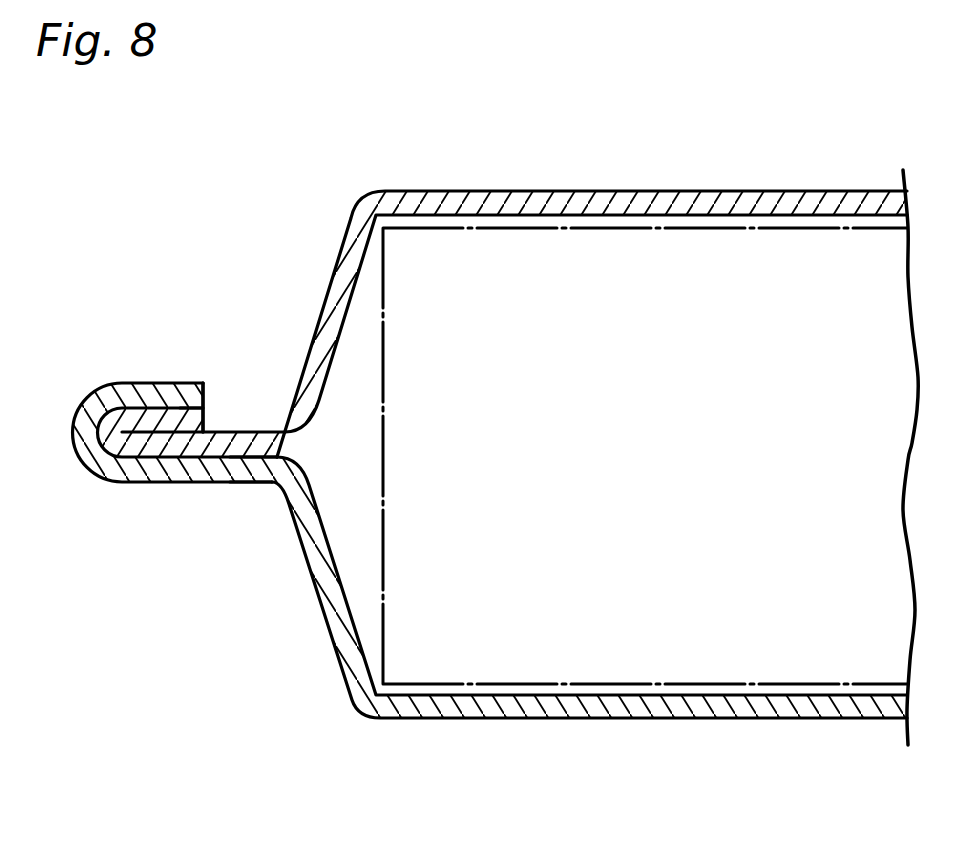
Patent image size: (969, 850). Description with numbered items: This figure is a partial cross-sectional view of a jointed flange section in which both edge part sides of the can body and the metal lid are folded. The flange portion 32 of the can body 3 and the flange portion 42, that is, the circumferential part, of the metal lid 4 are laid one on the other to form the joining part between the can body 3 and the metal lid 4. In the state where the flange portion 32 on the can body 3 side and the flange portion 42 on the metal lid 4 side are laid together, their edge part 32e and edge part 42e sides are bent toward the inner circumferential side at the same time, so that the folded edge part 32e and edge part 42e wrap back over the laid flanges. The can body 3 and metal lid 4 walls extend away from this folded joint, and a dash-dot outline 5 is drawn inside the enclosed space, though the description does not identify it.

The can body 3 is at (547, 202).
The metal lid 4 is at (593, 708).
The electrode assembly 5 is at (703, 228).
The flange portion 32 is at (246, 432).
The edge part 32e is at (193, 398).
The flange portion 42 is at (188, 472).
The edge part 42e is at (240, 457).